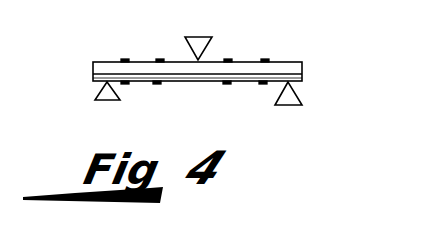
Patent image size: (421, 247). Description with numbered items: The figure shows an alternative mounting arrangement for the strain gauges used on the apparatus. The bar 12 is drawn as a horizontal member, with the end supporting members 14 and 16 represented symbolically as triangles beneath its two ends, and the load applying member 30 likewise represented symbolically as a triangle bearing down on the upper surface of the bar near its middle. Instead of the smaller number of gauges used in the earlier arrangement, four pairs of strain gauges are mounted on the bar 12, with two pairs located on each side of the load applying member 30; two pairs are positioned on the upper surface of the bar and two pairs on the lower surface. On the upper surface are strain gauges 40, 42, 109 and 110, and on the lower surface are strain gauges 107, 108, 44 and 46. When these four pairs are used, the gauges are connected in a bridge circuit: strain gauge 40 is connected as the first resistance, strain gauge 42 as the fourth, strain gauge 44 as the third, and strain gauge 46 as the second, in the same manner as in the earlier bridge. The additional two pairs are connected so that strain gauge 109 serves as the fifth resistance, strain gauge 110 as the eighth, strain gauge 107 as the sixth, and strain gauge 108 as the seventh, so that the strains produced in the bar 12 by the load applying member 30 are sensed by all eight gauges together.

The bar 12 is at (105, 62).
The end supporting member 14 is at (107, 100).
The end supporting member 16 is at (288, 105).
The load applying member 30 is at (199, 36).
The strain gauge 40 is at (125, 59).
The strain gauge 42 is at (160, 59).
The strain gauge 44 is at (227, 84).
The strain gauge 46 is at (263, 84).
The strain gauge 107 is at (125, 84).
The strain gauge 108 is at (157, 84).
The strain gauge 109 is at (228, 59).
The strain gauge 110 is at (266, 58).